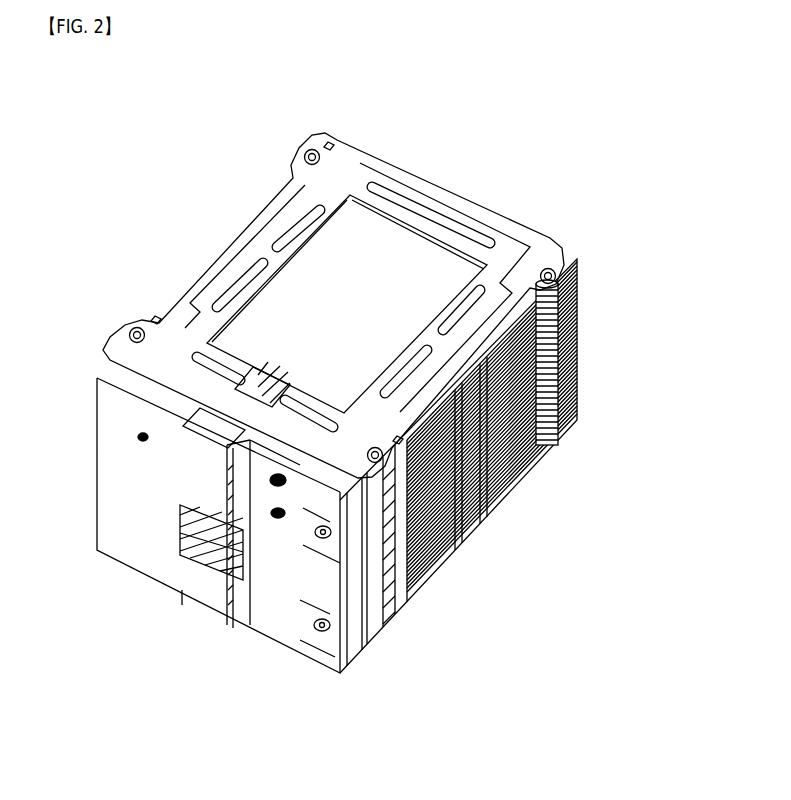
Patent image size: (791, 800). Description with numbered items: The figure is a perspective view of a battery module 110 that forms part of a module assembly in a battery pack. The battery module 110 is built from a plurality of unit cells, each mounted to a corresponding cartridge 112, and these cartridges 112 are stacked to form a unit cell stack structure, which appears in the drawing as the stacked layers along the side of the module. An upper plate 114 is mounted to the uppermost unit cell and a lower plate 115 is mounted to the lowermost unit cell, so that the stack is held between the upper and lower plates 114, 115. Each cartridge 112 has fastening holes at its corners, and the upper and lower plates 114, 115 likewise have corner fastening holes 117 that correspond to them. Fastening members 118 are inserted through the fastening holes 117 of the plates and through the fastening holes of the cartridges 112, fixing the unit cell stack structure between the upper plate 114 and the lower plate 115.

The battery module 110 is at (114, 138).
The cartridge 112 is at (560, 403).
The upper plate 114 is at (545, 260).
The lower plate 115 is at (500, 503).
The fastening hole 117 is at (568, 283).
The fastening member 118 is at (556, 268).